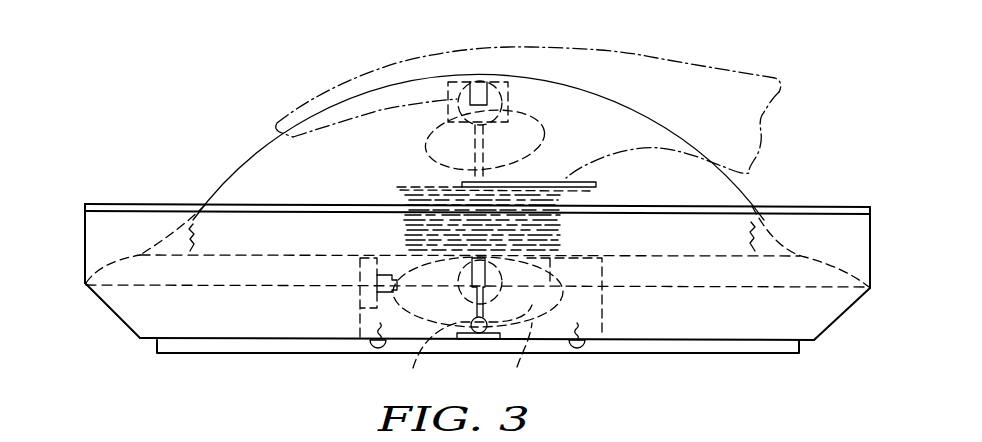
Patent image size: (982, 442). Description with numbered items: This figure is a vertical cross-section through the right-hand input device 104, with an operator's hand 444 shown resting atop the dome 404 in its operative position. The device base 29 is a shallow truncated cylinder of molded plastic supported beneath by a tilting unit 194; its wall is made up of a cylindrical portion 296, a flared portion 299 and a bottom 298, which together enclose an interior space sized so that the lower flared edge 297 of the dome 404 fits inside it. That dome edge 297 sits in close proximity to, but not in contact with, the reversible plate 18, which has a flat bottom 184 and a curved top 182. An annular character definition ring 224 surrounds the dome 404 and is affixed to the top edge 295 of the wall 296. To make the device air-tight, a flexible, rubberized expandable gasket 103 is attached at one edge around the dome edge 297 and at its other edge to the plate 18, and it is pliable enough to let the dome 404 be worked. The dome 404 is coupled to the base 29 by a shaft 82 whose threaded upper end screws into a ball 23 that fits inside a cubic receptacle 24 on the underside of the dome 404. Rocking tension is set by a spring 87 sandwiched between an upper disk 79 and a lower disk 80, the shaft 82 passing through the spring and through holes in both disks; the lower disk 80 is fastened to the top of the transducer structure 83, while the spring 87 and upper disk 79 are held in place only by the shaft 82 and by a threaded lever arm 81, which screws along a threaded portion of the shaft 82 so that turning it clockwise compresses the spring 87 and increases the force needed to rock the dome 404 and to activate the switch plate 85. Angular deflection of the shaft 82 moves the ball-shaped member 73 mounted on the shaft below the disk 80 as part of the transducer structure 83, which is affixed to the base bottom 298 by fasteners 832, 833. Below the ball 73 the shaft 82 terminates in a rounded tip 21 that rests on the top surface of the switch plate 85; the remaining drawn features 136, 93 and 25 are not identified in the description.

The right-hand input device 104 is at (248, 93).
The character definition ring 224 is at (153, 202).
The top edge of wall 295 is at (85, 208).
The curved top of reversible plate 182 is at (85, 254).
The device base 29 is at (86, 270).
The flat bottom of reversible plate 184 is at (96, 283).
The bottom of device base 298 is at (148, 343).
The tilting unit 194 is at (798, 352).
The flared portion of base wall 299 is at (843, 318).
The cylindrical portion of base wall 296 is at (872, 258).
The lower flared edge of dome 297 is at (784, 243).
The reversible plate 18 is at (766, 279).
The expandable gasket 103 is at (205, 245).
The operator's hand 444 is at (515, 28).
The dome 404 is at (643, 132).
The cubic receptacle 24 is at (508, 101).
The ball 23 is at (437, 124).
The shaft 82 is at (493, 176).
The upper disk 79 is at (408, 187).
The threaded lever arm 81 is at (590, 191).
The spring 87 is at (567, 208).
The lower disk 80 is at (400, 253).
The transducer structure 83 is at (370, 296).
The right bracket 136 is at (530, 268).
The lower bearing 93 is at (463, 299).
The ball-shaped member 73 is at (491, 293).
The switch plate 85 is at (476, 342).
The rounded tip 21 is at (418, 355).
The right support 25 is at (513, 355).
The fasteners 832 is at (380, 353).
The right screw 833 is at (573, 352).